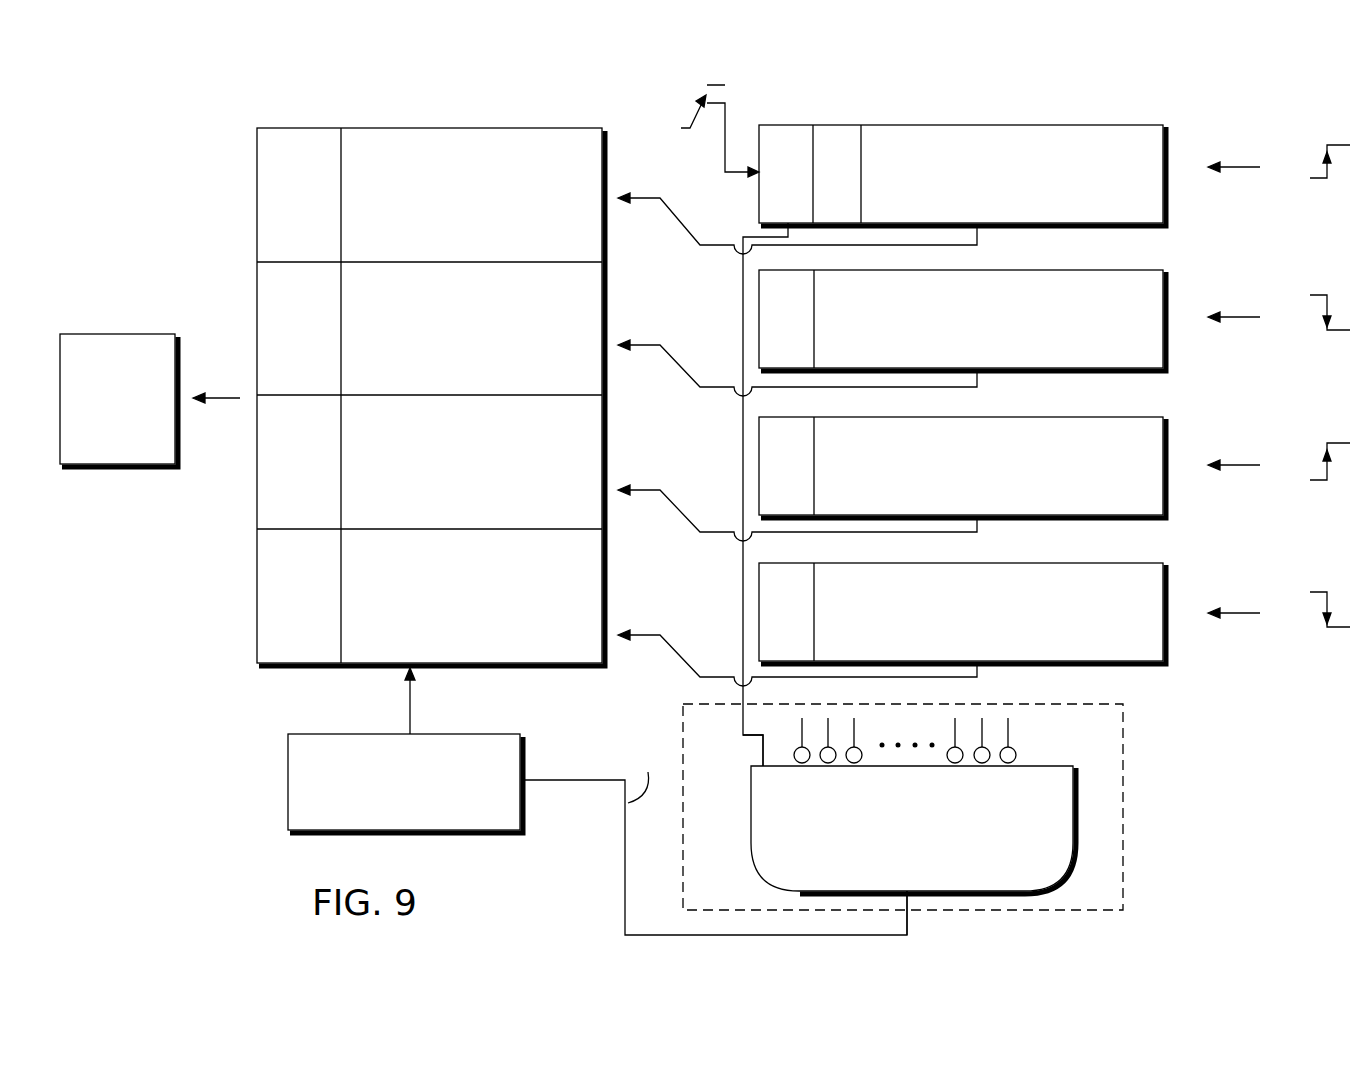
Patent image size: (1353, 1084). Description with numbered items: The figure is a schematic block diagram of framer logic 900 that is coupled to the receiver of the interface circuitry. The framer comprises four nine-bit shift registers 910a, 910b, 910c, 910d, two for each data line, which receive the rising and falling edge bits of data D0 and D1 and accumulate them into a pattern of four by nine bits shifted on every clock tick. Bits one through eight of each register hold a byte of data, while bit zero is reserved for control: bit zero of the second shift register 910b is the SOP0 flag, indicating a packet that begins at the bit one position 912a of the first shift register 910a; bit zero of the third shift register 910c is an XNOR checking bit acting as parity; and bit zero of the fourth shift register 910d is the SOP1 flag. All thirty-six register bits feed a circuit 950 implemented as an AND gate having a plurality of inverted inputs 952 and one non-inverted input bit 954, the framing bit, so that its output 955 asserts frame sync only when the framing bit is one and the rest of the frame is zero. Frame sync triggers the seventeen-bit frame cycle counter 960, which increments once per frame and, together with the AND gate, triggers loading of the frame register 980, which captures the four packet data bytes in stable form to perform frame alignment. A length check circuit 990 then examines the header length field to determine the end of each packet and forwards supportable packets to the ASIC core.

The framer logic 900 is at (1255, 101).
The first shift register 910a is at (984, 166).
The second shift register 910b is at (1166, 371).
The third shift register 910c is at (1166, 518).
The fourth shift register 910d is at (1166, 664).
The second (bit 1) position 912a is at (831, 137).
The circuit 950 is at (903, 824).
The inverted inputs 952 is at (802, 763).
The input bit 954 is at (758, 764).
The output 955 is at (910, 895).
The frame cycle counter 960 is at (405, 750).
The frame register 980 is at (251, 125).
The length check circuit 990 is at (150, 400).